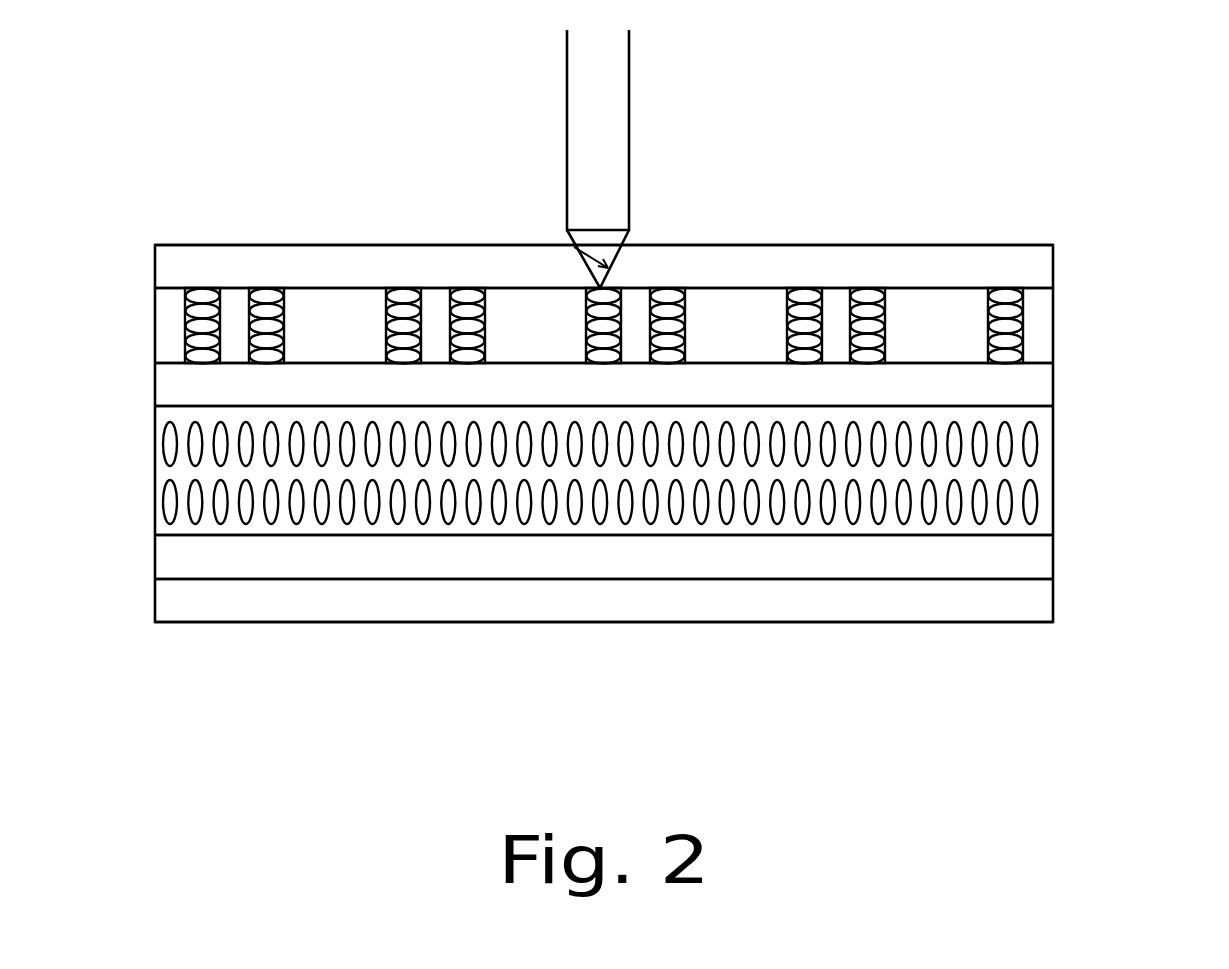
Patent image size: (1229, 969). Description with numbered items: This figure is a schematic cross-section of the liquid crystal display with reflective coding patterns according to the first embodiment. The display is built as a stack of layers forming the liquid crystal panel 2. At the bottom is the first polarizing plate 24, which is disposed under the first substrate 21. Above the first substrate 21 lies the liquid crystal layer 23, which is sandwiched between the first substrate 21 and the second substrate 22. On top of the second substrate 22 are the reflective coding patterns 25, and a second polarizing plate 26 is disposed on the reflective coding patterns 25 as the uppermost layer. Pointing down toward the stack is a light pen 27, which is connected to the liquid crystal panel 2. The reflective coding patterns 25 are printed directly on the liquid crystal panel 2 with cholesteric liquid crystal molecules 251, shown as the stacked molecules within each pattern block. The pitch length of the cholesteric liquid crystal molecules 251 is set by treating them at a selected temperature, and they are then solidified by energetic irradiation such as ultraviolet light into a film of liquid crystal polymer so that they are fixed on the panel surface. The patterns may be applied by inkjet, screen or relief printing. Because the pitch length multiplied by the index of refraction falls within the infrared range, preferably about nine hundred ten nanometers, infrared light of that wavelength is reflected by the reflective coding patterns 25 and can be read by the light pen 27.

The liquid crystal panel 2 is at (1158, 245).
The first substrate 21 is at (1035, 565).
The second substrate 22 is at (1033, 393).
The liquid crystal layer 23 is at (1040, 471).
The first polarizing plate 24 is at (1040, 615).
The reflective coding patterns 25 is at (153, 288).
The cholesteric liquid crystal molecules 251 is at (1013, 329).
The second polarizing plate 26 is at (1036, 276).
The light pen 27 is at (613, 137).